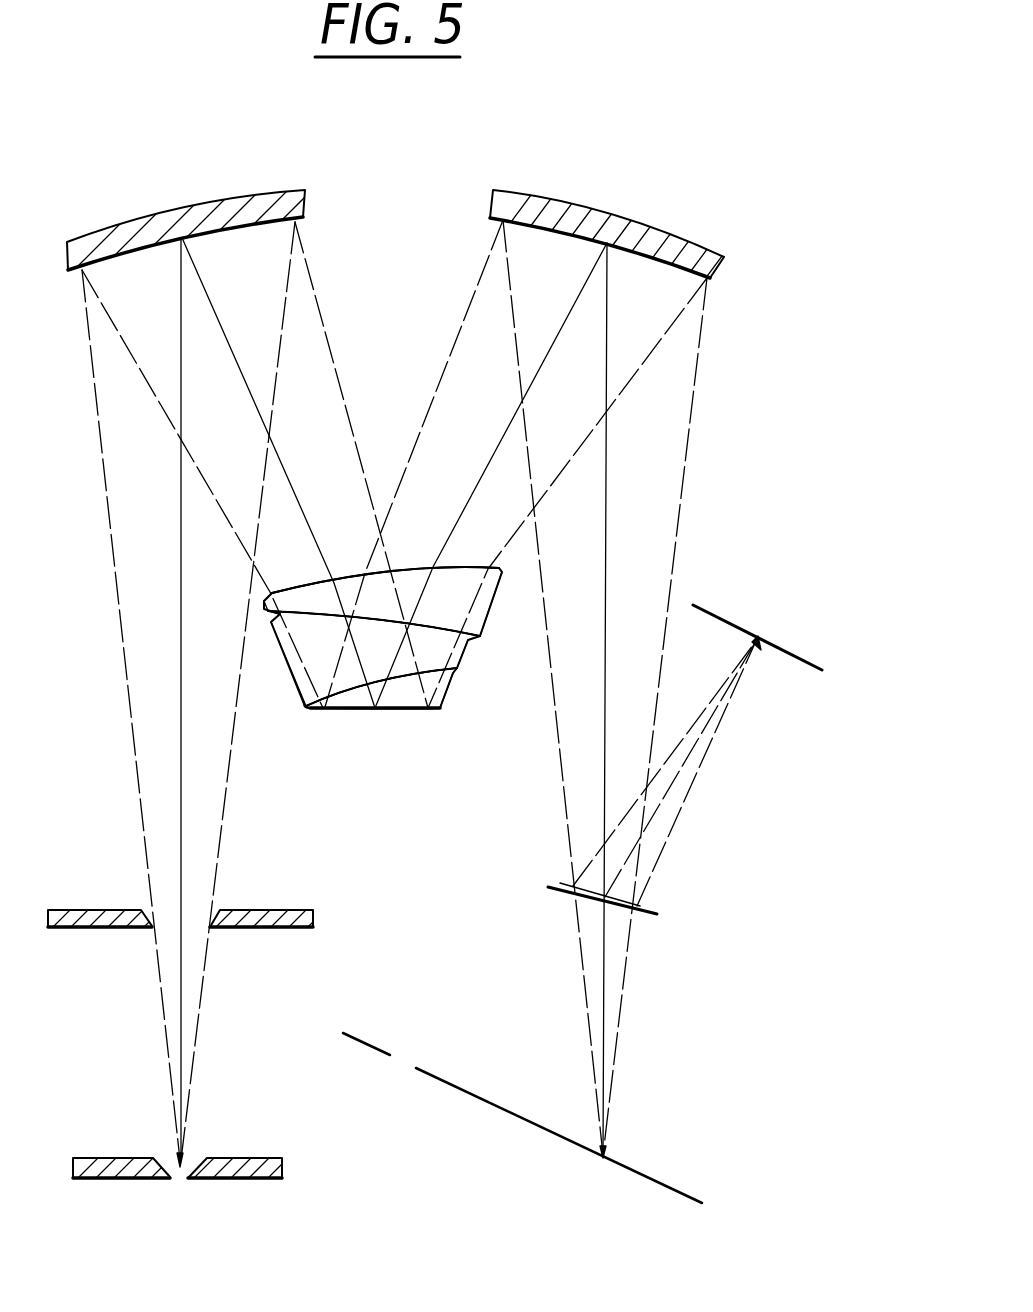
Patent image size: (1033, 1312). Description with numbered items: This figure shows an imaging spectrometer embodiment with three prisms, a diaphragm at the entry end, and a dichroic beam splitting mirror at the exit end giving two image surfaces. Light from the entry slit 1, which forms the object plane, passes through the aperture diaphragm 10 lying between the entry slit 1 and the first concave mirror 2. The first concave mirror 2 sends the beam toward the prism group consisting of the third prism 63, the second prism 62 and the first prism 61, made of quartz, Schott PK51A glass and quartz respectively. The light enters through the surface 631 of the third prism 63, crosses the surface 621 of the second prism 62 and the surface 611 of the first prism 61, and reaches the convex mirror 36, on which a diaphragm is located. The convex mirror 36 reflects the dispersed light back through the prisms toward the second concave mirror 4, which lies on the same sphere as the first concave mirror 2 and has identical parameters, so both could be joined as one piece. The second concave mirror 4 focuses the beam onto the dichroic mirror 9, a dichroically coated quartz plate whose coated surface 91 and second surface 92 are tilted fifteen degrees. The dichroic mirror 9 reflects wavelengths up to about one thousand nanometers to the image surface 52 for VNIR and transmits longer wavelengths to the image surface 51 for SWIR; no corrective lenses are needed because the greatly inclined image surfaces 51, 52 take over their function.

The entry slit 1 is at (247, 1158).
The first concave mirror 2 is at (172, 208).
The second concave mirror 4 is at (603, 210).
The dichroic mirror 9 is at (629, 919).
The dichroically coated surface of the dichroic mirror 91 is at (640, 903).
The second surface of the dichroic mirror 92 is at (640, 917).
The aperture diaphragm 10 is at (285, 928).
The convex mirror 36 is at (408, 712).
The image surface for SWIR 51 is at (668, 1185).
The image surface for VNIR 52 is at (783, 650).
The first prism 61 is at (452, 692).
The second prism 62 is at (467, 647).
The third prism 63 is at (488, 606).
The surface of the first prism 611 is at (352, 678).
The surface of the second prism 621 is at (368, 612).
The surface of the third prism 631 is at (412, 568).